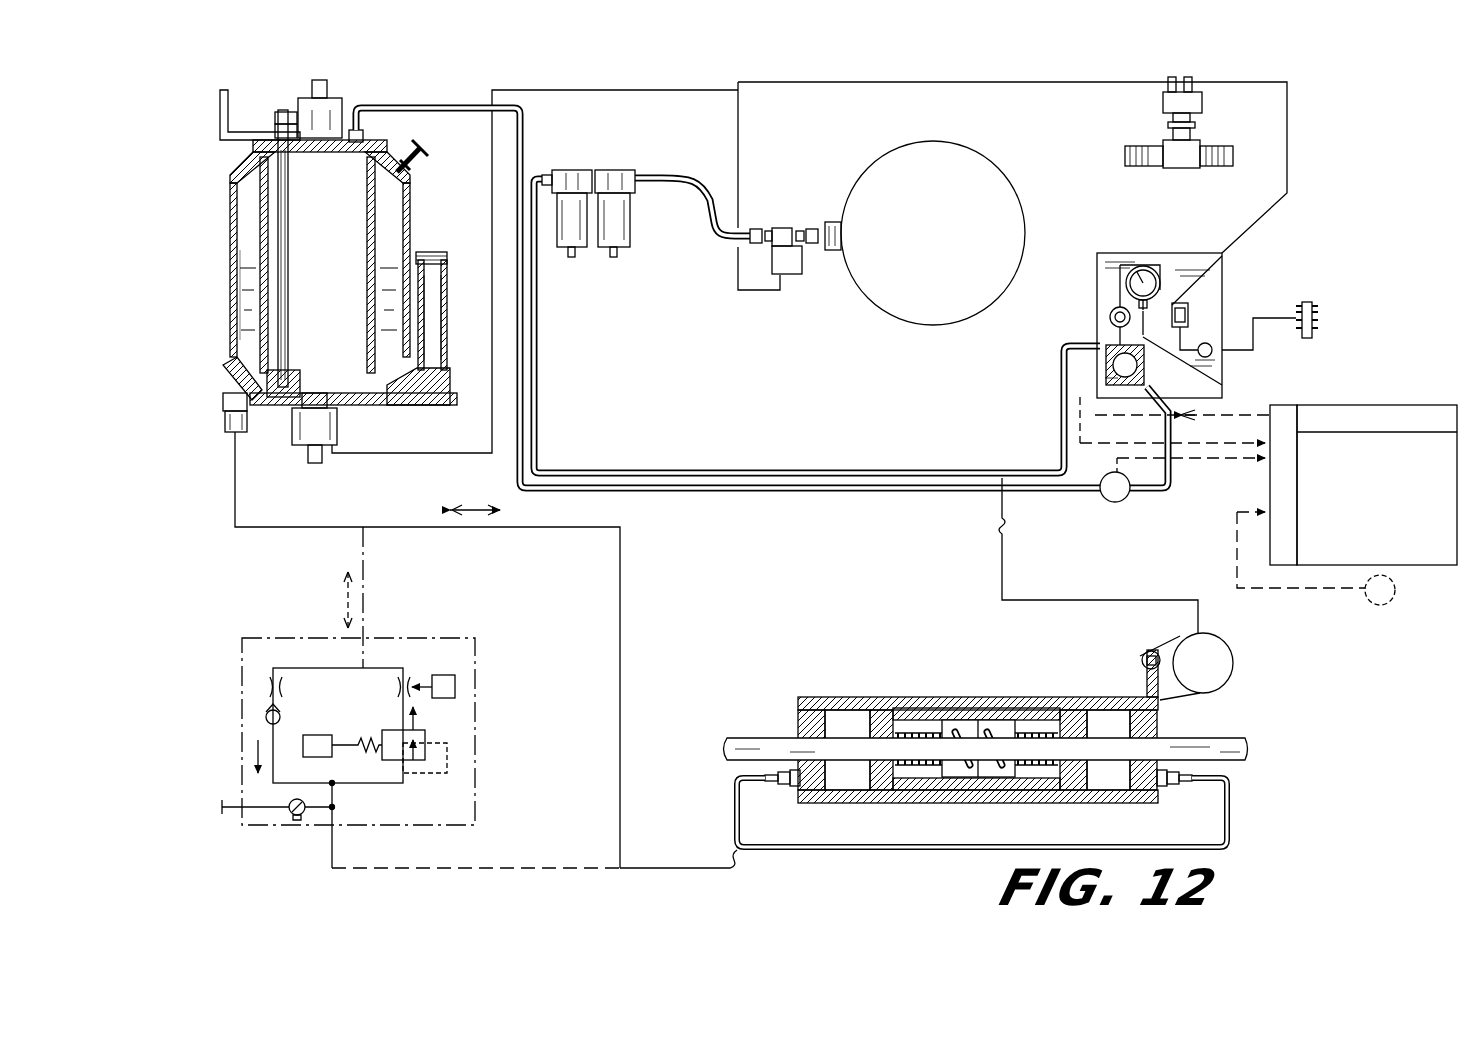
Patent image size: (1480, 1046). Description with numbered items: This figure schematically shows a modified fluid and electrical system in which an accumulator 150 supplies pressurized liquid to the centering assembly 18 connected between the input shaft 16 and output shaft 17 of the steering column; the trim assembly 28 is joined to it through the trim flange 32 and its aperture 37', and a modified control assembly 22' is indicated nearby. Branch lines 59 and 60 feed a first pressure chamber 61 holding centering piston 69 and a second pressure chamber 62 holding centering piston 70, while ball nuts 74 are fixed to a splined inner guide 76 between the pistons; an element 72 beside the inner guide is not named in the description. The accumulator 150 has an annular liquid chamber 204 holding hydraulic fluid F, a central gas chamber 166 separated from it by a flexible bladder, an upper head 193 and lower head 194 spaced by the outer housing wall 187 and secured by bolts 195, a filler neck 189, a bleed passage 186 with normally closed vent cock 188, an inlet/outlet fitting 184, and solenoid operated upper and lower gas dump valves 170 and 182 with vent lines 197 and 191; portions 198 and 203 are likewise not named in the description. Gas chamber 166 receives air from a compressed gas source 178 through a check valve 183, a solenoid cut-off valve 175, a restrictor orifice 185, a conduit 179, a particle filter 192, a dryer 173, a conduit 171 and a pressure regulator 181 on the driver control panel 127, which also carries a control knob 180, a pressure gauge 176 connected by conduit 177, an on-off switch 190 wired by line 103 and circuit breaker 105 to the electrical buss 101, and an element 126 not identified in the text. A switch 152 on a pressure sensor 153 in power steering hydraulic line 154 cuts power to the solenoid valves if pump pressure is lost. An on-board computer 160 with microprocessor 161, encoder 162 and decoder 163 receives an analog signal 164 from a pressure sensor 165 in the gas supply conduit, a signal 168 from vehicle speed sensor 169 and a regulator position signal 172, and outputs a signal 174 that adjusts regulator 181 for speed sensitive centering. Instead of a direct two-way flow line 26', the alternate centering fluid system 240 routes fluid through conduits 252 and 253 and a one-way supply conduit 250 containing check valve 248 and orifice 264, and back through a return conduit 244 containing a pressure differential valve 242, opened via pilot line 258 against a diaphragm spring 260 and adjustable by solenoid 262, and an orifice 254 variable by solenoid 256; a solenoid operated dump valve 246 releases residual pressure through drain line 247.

The input shaft 16 is at (741, 736).
The output shaft 17 is at (1250, 763).
The centering assembly 18 is at (968, 755).
The control unit 22' is at (1404, 248).
The direct two-way flow line 26' is at (427, 650).
The trim assembly 28 is at (1245, 690).
The trim flange 32 is at (1162, 690).
The line to roller 37' is at (1090, 571).
The branch line 59 is at (735, 790).
The branch line 60 is at (1005, 849).
The first pressure chamber 61 is at (841, 713).
The second pressure chamber 62 is at (1100, 712).
The centering piston 69 is at (852, 790).
The centering piston 70 is at (1092, 776).
The spring 72 is at (926, 790).
The ball nuts 74 is at (960, 778).
The splined inner guide 76 is at (1046, 790).
The electrical buss 101 is at (1308, 300).
The line 103 is at (1262, 333).
The circuit breaker 105 is at (1212, 345).
The housing 126 is at (1101, 292).
The driver control panel 127 is at (1210, 253).
The accumulator 150 is at (302, 263).
The switch 152 is at (1163, 96).
The pressure sensor 153 is at (1170, 140).
The hydraulic line 154 is at (1200, 148).
The on-board computer 160 is at (1375, 490).
The microprocessor 161 is at (1440, 566).
The encoder 162 is at (1292, 566).
The decoder 163 is at (1440, 406).
The analog signal 164 is at (1153, 462).
The pressure sensor 165 is at (1106, 500).
The central gas chamber 166 is at (314, 248).
The analog signal 168 is at (1237, 566).
The vehicle speed sensor 169 is at (1380, 606).
The upper gas dump valve 170 is at (304, 100).
The conduit 171 is at (610, 470).
The analog signal 172 is at (1080, 440).
The dryer 173 is at (582, 255).
The analog signal 174 is at (1092, 406).
The solenoid operated cut-off valve 175 is at (796, 278).
The pressure gauge 176 is at (1136, 268).
The conduit 177 is at (1222, 388).
The compressed gas source 178 is at (910, 322).
The conduit 179 is at (662, 175).
The control knob 180 is at (1110, 318).
The pressure regulator 181 is at (1115, 370).
The lower gas dump valve 182 is at (340, 422).
The check valve 183 is at (756, 228).
The inlet/outlet fitting 184 is at (226, 440).
The restrictor orifice 185 is at (828, 222).
The bleed passage 186 is at (414, 142).
The outer housing wall 187 is at (232, 218).
The vent cock 188 is at (490, 110).
The filler neck 189 is at (450, 375).
The on-off switch 190 is at (1190, 310).
The drain line 191 is at (325, 460).
The particle filter 192 is at (624, 250).
The upper head 193 is at (232, 166).
The lower head 194 is at (258, 410).
The bolts 195 is at (290, 158).
The vent line 197 is at (326, 82).
The outer wall 198 is at (388, 252).
The chamfer 203 is at (228, 370).
The annular liquid chamber 204 is at (240, 296).
The alternate centering fluid system 240 is at (350, 700).
The pressure differential valve 242 is at (425, 742).
The return conduit 244 is at (360, 784).
The solenoid operated dump valve 246 is at (290, 815).
The drain line 247 is at (224, 806).
The check valve 248 is at (266, 717).
The one-way supply conduit 250 is at (275, 670).
The inlet/outlet conduit 252 is at (365, 570).
The supply conduit 253 is at (540, 868).
The orifice 254 is at (400, 678).
The remotely controlled solenoid 256 is at (452, 676).
The pilot line 258 is at (447, 758).
The diaphragm spring 260 is at (333, 758).
The remotely controlled solenoid 262 is at (318, 758).
The orifice 264 is at (283, 682).
The fluid F is at (248, 266).